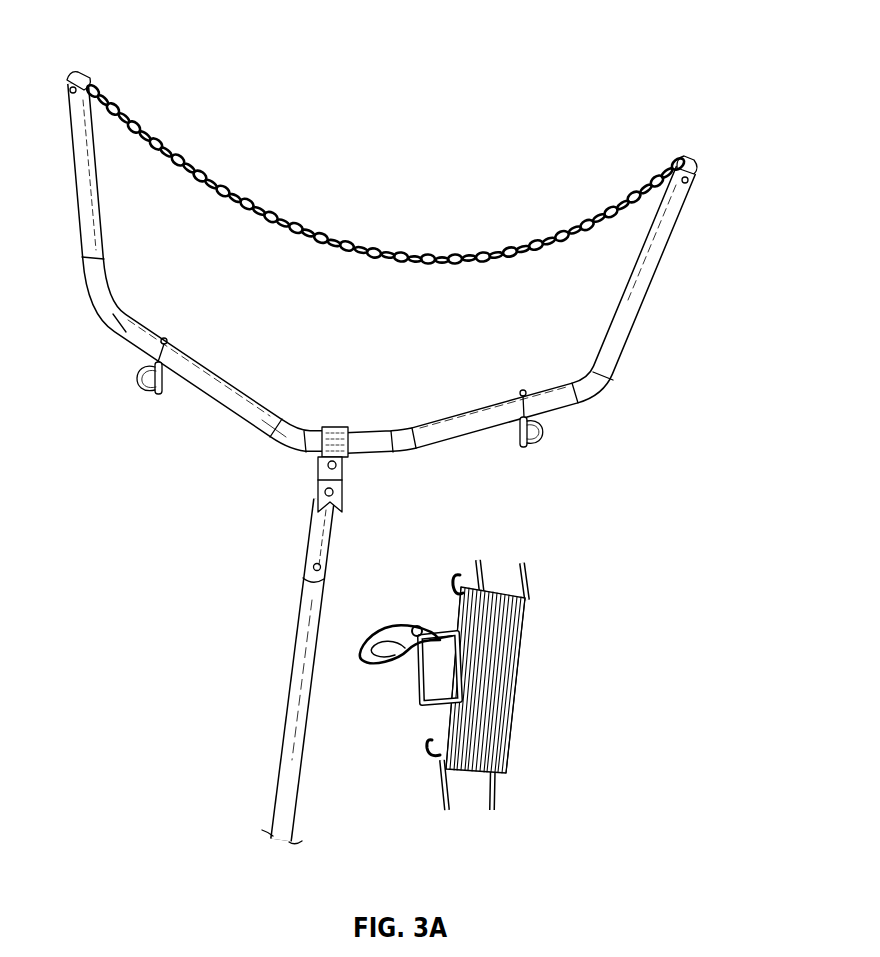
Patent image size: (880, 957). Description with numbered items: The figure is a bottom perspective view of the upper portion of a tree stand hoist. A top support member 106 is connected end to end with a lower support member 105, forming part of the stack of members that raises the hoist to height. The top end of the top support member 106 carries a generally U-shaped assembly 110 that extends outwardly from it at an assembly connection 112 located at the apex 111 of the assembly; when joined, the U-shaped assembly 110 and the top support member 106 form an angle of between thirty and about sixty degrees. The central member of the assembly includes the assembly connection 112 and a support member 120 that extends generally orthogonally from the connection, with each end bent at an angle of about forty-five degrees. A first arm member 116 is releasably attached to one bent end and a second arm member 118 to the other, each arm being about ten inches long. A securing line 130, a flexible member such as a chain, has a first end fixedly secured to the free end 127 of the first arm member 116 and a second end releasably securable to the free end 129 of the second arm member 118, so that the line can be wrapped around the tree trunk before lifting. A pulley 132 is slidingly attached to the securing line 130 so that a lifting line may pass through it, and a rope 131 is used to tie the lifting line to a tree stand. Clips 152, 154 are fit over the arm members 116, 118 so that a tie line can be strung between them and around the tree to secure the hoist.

The support member 105 is at (283, 780).
The top support member 106 is at (300, 662).
The U-shaped assembly 110 is at (442, 428).
The apex 111 is at (300, 447).
The assembly connection 112 is at (345, 483).
The first arm member 116 is at (130, 349).
The second arm member 118 is at (664, 232).
The support member 120 is at (336, 430).
The free end 127 is at (70, 78).
The free end 129 is at (695, 170).
The securing line 130 is at (388, 250).
The rope 131 is at (522, 652).
The pulley 132 is at (383, 672).
The clip 152 is at (140, 386).
The clip 154 is at (548, 437).